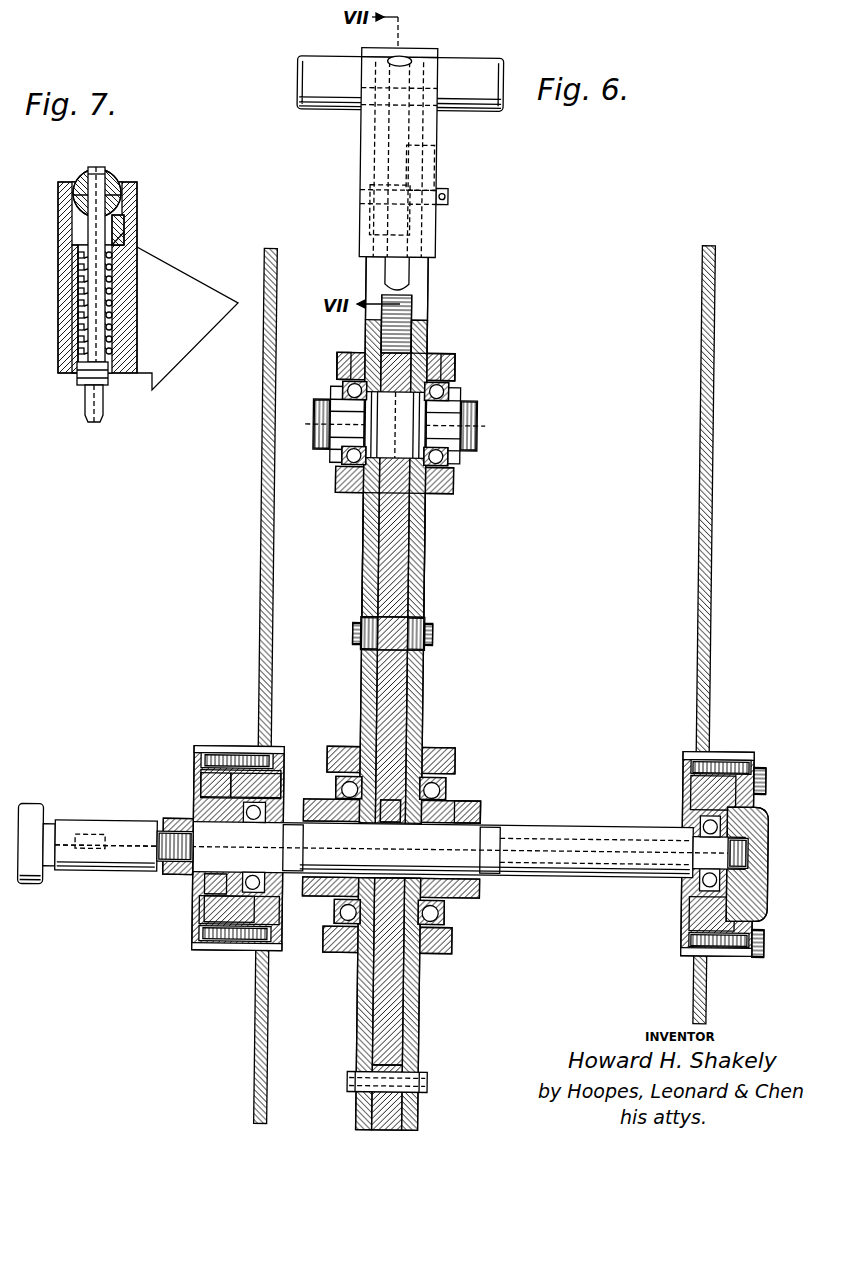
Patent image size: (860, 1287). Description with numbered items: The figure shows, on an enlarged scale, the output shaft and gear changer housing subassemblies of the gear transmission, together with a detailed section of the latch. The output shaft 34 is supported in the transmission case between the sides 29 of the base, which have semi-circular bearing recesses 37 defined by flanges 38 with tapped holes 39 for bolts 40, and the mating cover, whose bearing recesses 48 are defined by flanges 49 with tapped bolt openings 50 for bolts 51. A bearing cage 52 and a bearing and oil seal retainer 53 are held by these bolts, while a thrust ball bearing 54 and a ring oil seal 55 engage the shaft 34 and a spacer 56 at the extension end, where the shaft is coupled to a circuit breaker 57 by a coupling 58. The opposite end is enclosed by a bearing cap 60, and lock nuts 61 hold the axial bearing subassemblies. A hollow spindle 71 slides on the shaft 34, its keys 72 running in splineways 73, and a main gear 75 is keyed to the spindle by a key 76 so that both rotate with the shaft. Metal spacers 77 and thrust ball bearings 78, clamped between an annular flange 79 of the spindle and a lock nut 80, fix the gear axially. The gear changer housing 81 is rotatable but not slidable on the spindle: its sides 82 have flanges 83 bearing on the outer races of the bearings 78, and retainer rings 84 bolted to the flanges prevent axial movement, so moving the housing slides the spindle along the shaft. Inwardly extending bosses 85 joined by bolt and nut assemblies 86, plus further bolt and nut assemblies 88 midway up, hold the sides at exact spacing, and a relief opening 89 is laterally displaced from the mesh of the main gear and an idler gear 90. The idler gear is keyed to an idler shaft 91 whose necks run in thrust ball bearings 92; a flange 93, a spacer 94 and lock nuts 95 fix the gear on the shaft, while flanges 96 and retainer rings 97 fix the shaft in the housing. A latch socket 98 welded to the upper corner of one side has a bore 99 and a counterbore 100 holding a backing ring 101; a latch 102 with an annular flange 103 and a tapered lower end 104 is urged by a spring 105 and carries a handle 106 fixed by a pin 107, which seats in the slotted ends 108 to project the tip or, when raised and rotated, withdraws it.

In FIG. 6, the sides 29 is at (258, 1025).
In FIG. 6, the output shaft 34 is at (594, 834).
In FIG. 6, the bearing recesses 37 is at (280, 908).
In FIG. 6, the flanges 38 is at (276, 950).
In FIG. 6, the tapped holes 39 is at (282, 932).
In FIG. 6, the bolts 40 is at (226, 952).
In FIG. 6, the bearing recesses 48 is at (270, 806).
In FIG. 6, the flanges 49 is at (250, 750).
In FIG. 6, the tapped bolt openings 50 is at (272, 766).
In FIG. 6, the bolts 51 is at (215, 749).
In FIG. 6, the bearing cage 52 is at (206, 797).
In FIG. 6, the bearing and oil seal retainer 53 is at (200, 803).
In FIG. 6, the thrust ball bearing 54 is at (204, 905).
In FIG. 6, the ring oil seal 55 is at (212, 884).
In FIG. 6, the spacer 56 is at (212, 878).
In FIG. 6, the circuit breaker 57 is at (33, 812).
In FIG. 6, the coupling 58 is at (99, 824).
In FIG. 6, the bearing cap 60 is at (764, 815).
In FIG. 6, the lock nuts 61 is at (165, 872).
In FIG. 6, the hollow spindle 71 is at (466, 802).
In FIG. 6, the keys 72 is at (498, 826).
In FIG. 6, the splineways 73 is at (535, 832).
In FIG. 6, the main gear 75 is at (400, 712).
In FIG. 6, the key 76 is at (398, 762).
In FIG. 6, the metal spacers 77 is at (362, 772).
In FIG. 6, the thrust ball bearings 78 is at (337, 790).
In FIG. 6, the annular flange 79 is at (352, 958).
In FIG. 6, the lock nut 80 is at (486, 815).
In FIG. 7, the gear changer housing 81 is at (216, 295).
In FIG. 6, the gear changer housing 81 is at (422, 547).
In FIG. 6, the sides 82 is at (366, 684).
In FIG. 6, the flanges 83 is at (356, 1002).
In FIG. 6, the retainer rings 84 is at (326, 748).
In FIG. 6, the bosses 85 is at (382, 1096).
In FIG. 6, the bolt and nut assemblies 86 is at (430, 1086).
In FIG. 6, the bolt and nut assemblies 88 is at (432, 633).
In FIG. 6, the relief opening 89 is at (362, 619).
In FIG. 6, the idler gear 90 is at (392, 520).
In FIG. 6, the idler shaft 91 is at (445, 415).
In FIG. 6, the thrust ball bearings 92 is at (340, 384).
In FIG. 6, the flange 93 is at (372, 400).
In FIG. 6, the spacer 94 is at (416, 360).
In FIG. 6, the lock nuts 95 is at (330, 454).
In FIG. 6, the flanges 96 is at (352, 352).
In FIG. 6, the retainer rings 97 is at (338, 356).
In FIG. 7, the latch socket 98 is at (66, 252).
In FIG. 6, the latch socket 98 is at (428, 134).
In FIG. 7, the bore 99 is at (78, 290).
In FIG. 7, the counterbore 100 is at (124, 230).
In FIG. 7, the backing ring 101 is at (122, 243).
In FIG. 7, the latch 102 is at (102, 300).
In FIG. 6, the latch 102 is at (402, 59).
In FIG. 7, the annular flange 103 is at (80, 378).
In FIG. 7, the tapered lower end 104 is at (104, 412).
In FIG. 6, the tapered lower end 104 is at (390, 279).
In FIG. 7, the spring 105 is at (74, 326).
In FIG. 7, the handle 106 is at (116, 183).
In FIG. 6, the handle 106 is at (485, 70).
In FIG. 7, the pin 107 is at (88, 180).
In FIG. 6, the ends 108 is at (362, 50).